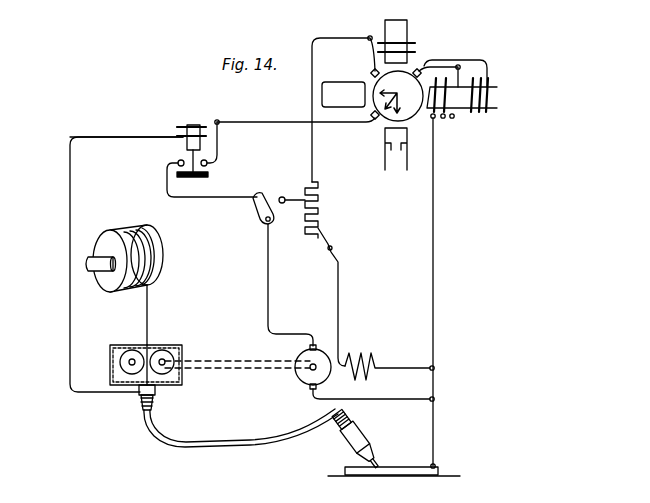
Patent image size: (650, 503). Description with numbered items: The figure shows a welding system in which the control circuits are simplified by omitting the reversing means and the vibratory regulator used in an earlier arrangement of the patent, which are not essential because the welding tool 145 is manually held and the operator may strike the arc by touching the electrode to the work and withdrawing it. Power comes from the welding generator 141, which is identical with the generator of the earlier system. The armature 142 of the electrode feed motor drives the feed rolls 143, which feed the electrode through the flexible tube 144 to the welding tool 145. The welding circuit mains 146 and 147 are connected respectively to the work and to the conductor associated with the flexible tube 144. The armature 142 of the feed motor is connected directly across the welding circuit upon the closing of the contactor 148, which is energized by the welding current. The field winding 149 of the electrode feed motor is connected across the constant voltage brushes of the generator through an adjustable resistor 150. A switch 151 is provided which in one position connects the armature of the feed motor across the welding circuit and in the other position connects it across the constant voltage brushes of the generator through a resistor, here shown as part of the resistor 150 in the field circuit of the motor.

The welding generator 141 is at (407, 72).
The armature of the electrode feed motor 142 is at (301, 378).
The feed rolls 143 is at (163, 352).
The flexible tube 144 is at (156, 407).
The welding tool 145 is at (347, 437).
The welding circuit main 146 is at (435, 420).
The welding circuit main 147 is at (68, 319).
The contactor 148 is at (218, 147).
The field winding 149 is at (362, 356).
The adjustable resistor 150 is at (320, 216).
The switch 151 is at (257, 216).